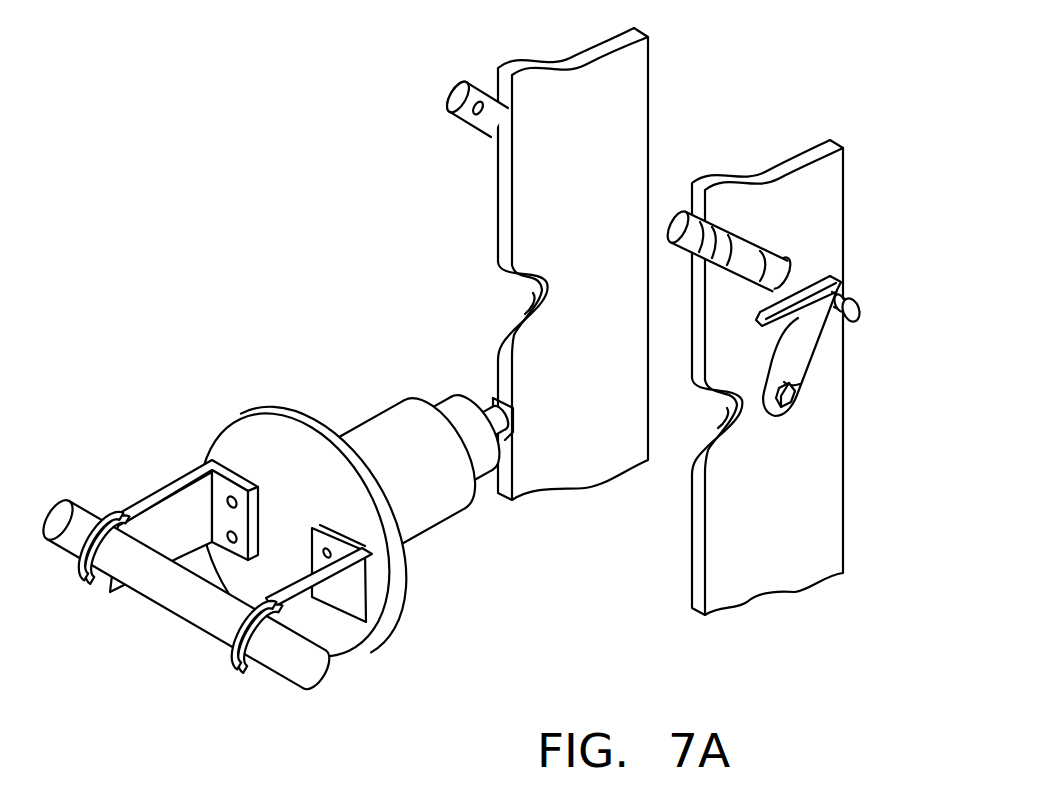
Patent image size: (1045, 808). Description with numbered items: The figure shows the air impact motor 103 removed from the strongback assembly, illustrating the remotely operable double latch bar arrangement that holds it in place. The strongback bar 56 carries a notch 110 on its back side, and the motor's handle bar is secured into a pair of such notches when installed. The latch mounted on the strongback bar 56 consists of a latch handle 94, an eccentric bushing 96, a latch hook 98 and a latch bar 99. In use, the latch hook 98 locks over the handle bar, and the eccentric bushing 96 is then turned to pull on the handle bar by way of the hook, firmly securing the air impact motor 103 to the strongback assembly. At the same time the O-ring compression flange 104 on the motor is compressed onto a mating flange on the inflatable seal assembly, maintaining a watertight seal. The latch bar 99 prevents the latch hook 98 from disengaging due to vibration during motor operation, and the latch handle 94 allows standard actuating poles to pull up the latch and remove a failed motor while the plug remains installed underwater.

The strongback bar 56 is at (826, 495).
The latch handle 94 is at (860, 308).
The eccentric bushing 96 is at (794, 404).
The latch hook 98 is at (797, 366).
The latch bar 99 is at (684, 212).
The air impact motor 103 is at (389, 396).
The O-ring compression flange 104 is at (305, 416).
The notch 110 is at (534, 322).